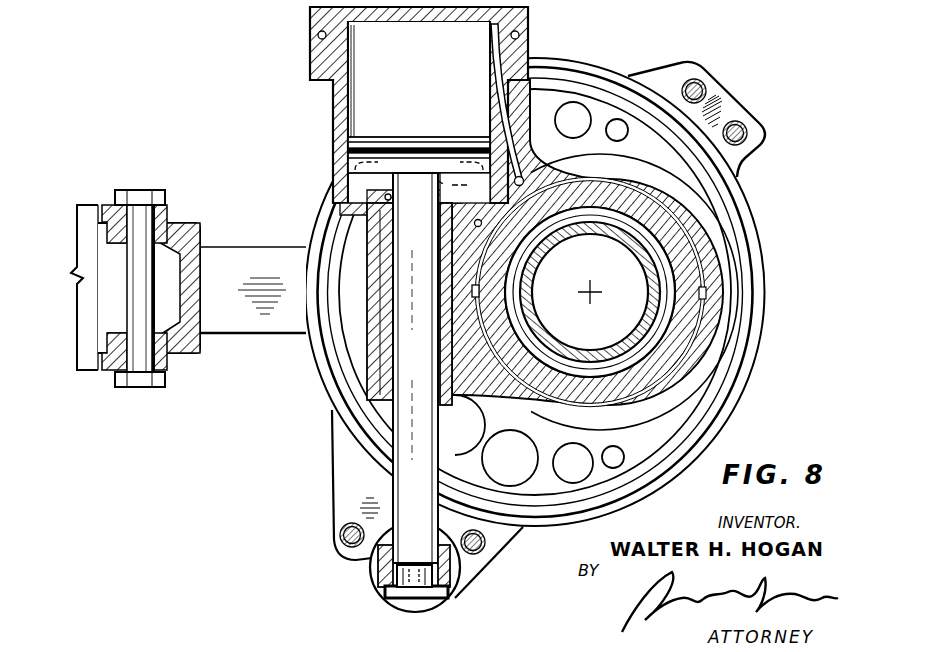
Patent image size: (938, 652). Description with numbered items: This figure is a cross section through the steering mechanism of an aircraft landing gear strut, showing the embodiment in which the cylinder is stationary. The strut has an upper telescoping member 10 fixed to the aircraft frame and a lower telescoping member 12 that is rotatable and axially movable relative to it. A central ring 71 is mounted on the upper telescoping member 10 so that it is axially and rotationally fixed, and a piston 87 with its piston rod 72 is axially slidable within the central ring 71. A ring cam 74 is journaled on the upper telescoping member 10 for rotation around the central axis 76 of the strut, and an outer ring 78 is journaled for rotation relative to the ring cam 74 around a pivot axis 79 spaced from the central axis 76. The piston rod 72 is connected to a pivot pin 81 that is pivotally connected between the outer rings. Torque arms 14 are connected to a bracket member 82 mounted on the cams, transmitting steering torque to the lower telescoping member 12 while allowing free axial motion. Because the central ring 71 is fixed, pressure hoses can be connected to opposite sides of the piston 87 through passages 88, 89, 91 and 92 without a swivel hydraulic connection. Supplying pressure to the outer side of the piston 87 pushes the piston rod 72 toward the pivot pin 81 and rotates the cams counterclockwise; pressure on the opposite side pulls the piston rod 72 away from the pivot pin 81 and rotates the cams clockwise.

The upper telescoping member 10 is at (705, 318).
The lower telescoping member 12 is at (540, 337).
The torque arms 14 is at (170, 360).
The central ring 71 is at (714, 275).
The piston rod 72 is at (404, 486).
The ring cam 74 is at (596, 88).
The central axis 76 is at (592, 289).
The outer ring 78 is at (745, 208).
The pivot axis 79 is at (535, 290).
The pivot pin 81 is at (385, 578).
The bracket member 82 is at (230, 255).
The piston 87 is at (414, 137).
The passage 88 is at (524, 180).
The passage 89 is at (500, 114).
The passage 91 is at (478, 227).
The passage 92 is at (477, 207).